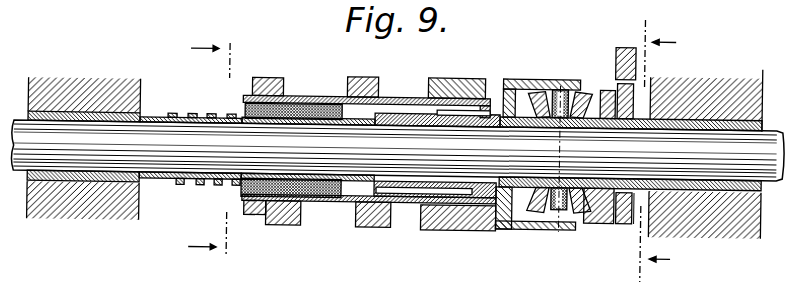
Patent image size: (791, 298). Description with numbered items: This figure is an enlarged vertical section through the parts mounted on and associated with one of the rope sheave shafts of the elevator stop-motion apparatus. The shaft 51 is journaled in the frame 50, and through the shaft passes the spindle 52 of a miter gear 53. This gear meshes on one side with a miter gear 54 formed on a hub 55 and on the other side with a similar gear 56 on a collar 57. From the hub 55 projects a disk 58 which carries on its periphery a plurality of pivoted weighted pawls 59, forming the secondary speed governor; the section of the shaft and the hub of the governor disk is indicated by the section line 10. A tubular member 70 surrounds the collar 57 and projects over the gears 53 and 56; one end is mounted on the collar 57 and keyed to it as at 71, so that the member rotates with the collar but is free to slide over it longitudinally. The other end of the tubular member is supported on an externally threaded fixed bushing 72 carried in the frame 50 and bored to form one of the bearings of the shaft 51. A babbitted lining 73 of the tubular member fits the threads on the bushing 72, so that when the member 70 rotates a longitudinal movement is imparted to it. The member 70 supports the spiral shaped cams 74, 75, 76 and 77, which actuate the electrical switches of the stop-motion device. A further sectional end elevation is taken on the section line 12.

The section line 10— 10 is at (670, 151).
The section line 12— 12 is at (206, 147).
The frame 50 is at (128, 83).
The shaft 51 is at (720, 138).
The spindle 52 is at (567, 102).
The miter gear 53 is at (547, 92).
The miter gear 54 is at (587, 190).
The hub 55 is at (606, 185).
The gear 56 is at (540, 192).
The collar 57 is at (483, 212).
The disk 58 is at (637, 206).
The pivoted weighted pawls 59 is at (167, 289).
The tubular member 70 is at (343, 96).
The key 71 is at (480, 110).
The externally threaded fixed bushing 72 is at (187, 110).
The babbitted lining 73 is at (240, 190).
The spiral shaped cam 74 is at (503, 72).
The spiral shaped cam 75 is at (458, 72).
The spiral shaped cam 76 is at (355, 73).
The spiral shaped cam 77 is at (262, 73).